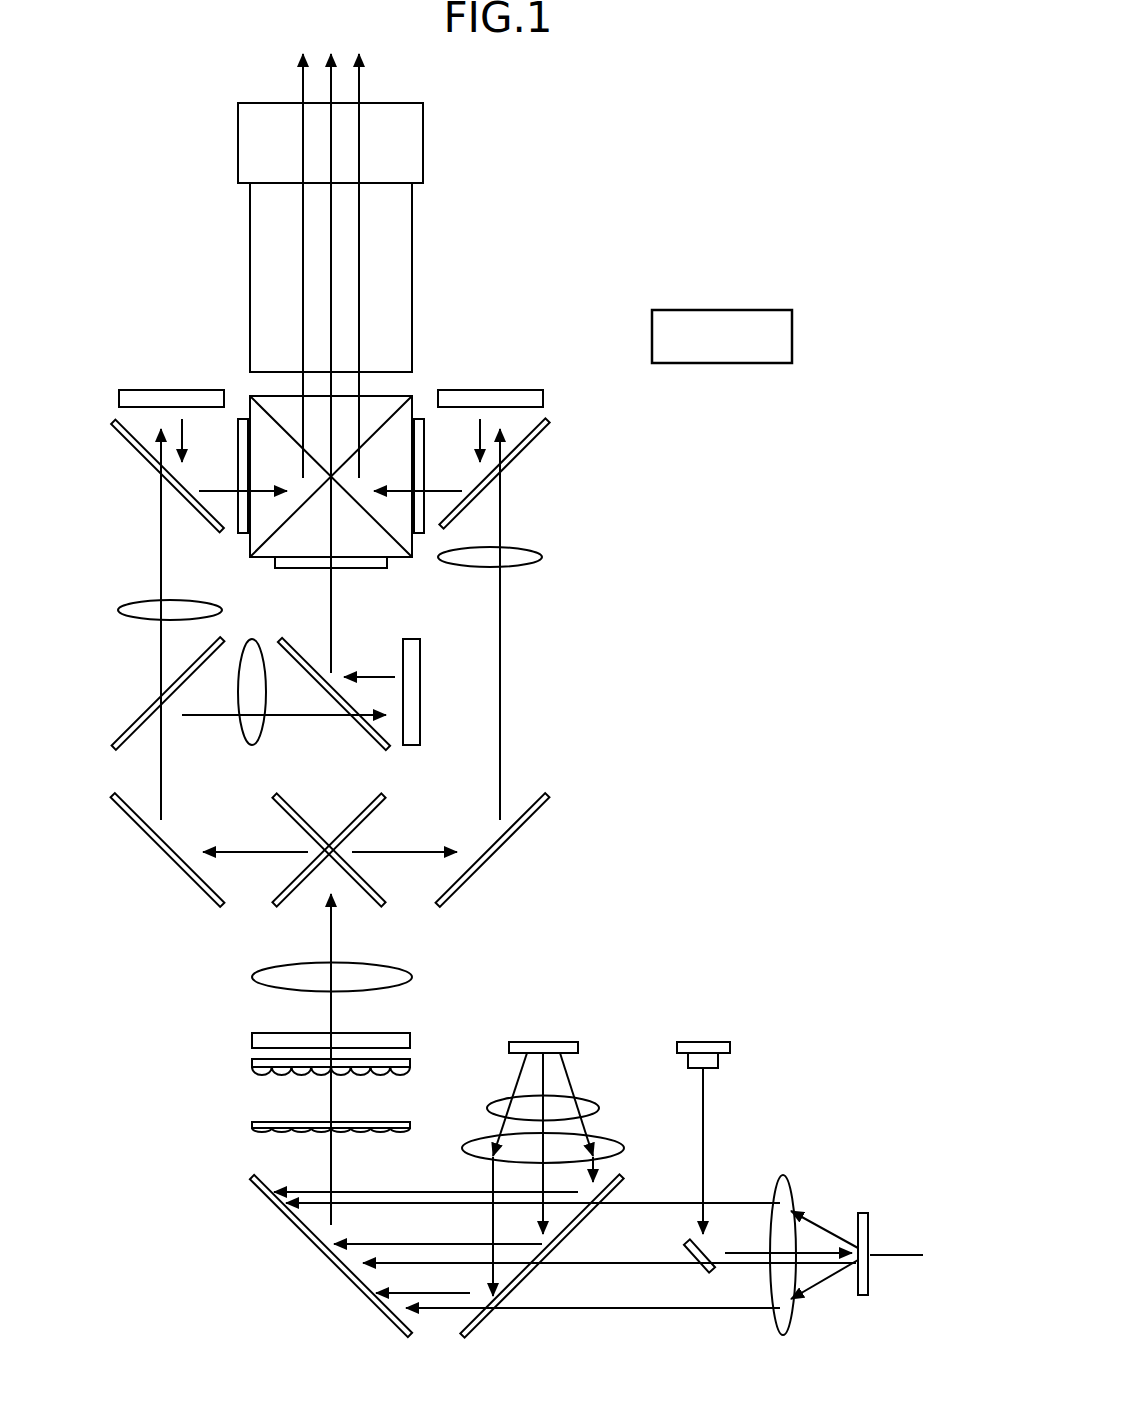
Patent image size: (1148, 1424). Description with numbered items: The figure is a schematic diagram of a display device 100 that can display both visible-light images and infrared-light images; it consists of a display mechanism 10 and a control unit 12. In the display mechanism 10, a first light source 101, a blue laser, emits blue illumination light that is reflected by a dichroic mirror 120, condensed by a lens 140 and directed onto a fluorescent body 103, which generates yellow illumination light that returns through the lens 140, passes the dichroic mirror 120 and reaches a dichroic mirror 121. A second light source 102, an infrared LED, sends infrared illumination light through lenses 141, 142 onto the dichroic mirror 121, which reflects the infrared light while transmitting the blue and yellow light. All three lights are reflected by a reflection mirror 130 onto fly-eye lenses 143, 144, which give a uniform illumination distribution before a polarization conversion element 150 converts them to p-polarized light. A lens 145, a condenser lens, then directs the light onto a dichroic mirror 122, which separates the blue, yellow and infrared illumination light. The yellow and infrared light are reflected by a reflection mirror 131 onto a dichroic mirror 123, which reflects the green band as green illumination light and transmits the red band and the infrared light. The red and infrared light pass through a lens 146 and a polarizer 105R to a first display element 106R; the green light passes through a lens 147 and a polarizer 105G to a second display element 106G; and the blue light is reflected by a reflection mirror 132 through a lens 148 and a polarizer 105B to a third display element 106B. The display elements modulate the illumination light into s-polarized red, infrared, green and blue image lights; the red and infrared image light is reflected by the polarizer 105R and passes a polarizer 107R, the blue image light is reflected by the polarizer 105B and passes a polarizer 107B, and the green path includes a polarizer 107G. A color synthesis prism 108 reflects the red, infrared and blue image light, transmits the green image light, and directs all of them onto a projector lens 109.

The display device 100 is at (484, 105).
The display mechanism 10 is at (460, 164).
The control unit 12 is at (730, 297).
The first light source 101 is at (708, 1040).
The second light source 102 is at (555, 1040).
The fluorescent body 103 is at (865, 1213).
The polarizer 105R is at (135, 450).
The polarizer 105G is at (363, 733).
The polarizer 105B is at (527, 448).
The first display element 106R is at (133, 389).
The second display element 106G is at (421, 672).
The third display element 106B is at (527, 389).
The polarizer 107R is at (247, 420).
The polarizer 107G is at (293, 569).
The polarizer 107B is at (418, 420).
The color synthesis prism 108 is at (398, 558).
The projector lens 109 is at (413, 230).
The dichroic mirror 120 is at (718, 1269).
The dichroic mirror 121 is at (527, 1278).
The dichroic mirror 122 is at (384, 797).
The dichroic mirror 123 is at (132, 725).
The reflection mirror 130 is at (297, 1232).
The reflection mirror 131 is at (132, 818).
The reflection mirror 132 is at (545, 793).
The lens 140 is at (782, 1175).
The lens 141 is at (582, 1095).
The lens 142 is at (603, 1137).
The lens 143 is at (410, 1122).
The lens 144 is at (410, 1060).
The lens 145 is at (398, 967).
The lens 146 is at (128, 600).
The lens 147 is at (240, 725).
The lens 148 is at (533, 569).
The polarization conversion element 150 is at (398, 1032).